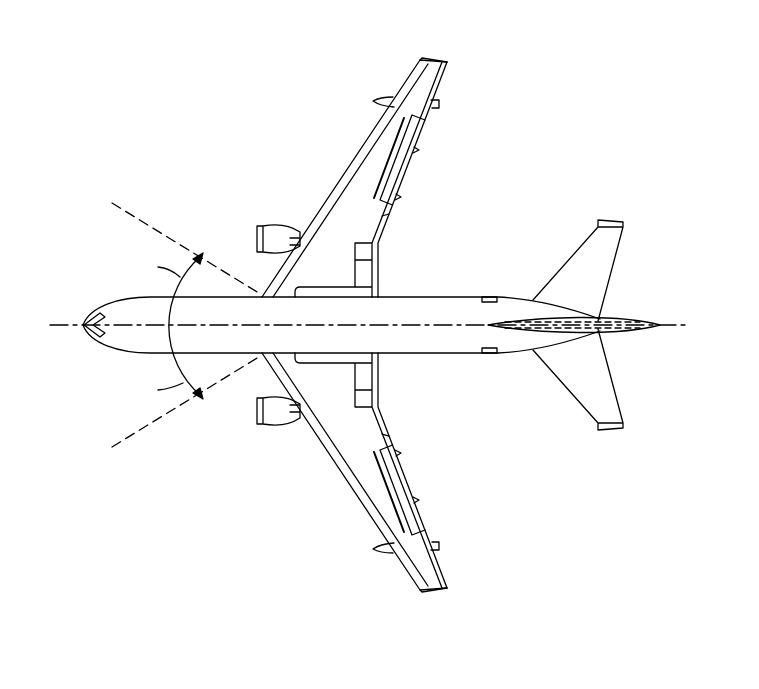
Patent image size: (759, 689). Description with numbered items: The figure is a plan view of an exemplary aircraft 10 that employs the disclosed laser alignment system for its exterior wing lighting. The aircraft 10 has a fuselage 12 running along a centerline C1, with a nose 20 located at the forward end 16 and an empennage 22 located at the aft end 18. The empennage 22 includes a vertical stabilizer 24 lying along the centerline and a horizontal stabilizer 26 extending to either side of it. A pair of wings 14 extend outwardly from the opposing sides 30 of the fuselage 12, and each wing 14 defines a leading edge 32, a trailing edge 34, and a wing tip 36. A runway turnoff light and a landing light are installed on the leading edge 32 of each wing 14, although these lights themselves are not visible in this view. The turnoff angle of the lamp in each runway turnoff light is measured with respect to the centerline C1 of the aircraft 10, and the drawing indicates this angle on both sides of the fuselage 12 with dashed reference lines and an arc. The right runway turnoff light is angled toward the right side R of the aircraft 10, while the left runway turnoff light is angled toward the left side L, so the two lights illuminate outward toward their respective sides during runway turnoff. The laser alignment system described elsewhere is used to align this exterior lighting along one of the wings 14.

The aircraft 10 is at (660, 65).
The fuselage 12 is at (465, 303).
The wings 14 is at (393, 170).
The forward end 16 is at (93, 304).
The aft end 18 is at (638, 237).
The nose 20 is at (88, 332).
The empennage 22 is at (677, 328).
The vertical stabilizer 24 is at (600, 320).
The horizontal stabilizer 26 is at (580, 268).
The opposing sides 30 is at (393, 273).
The leading edge 32 is at (345, 171).
The trailing edge 34 is at (398, 211).
The wing tip 36 is at (441, 62).
The centerline C1 is at (445, 328).
The right side R is at (525, 97).
The left side L is at (522, 522).